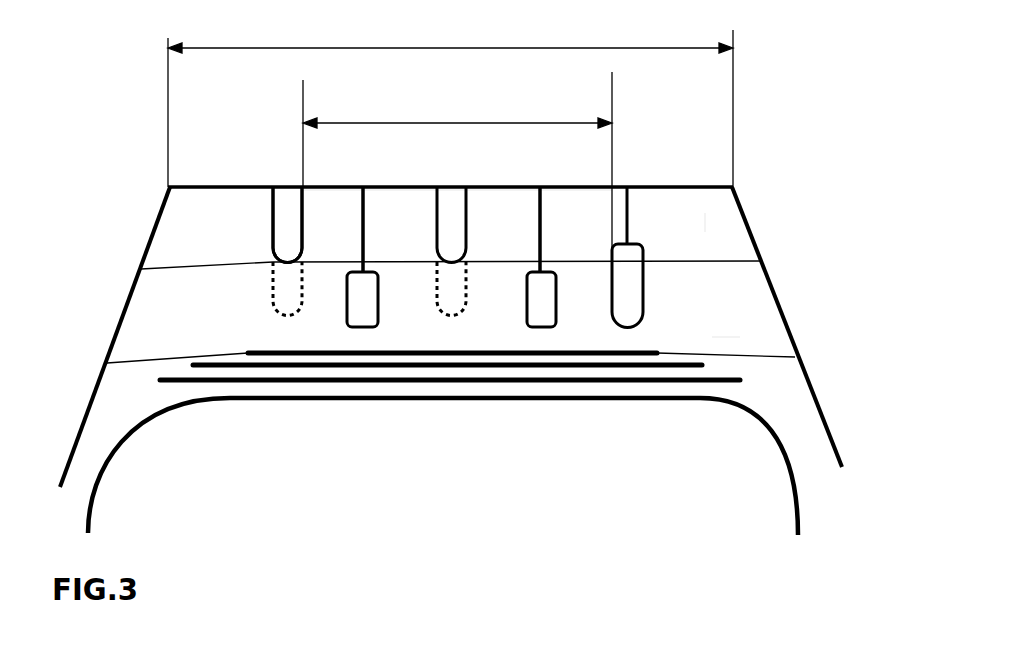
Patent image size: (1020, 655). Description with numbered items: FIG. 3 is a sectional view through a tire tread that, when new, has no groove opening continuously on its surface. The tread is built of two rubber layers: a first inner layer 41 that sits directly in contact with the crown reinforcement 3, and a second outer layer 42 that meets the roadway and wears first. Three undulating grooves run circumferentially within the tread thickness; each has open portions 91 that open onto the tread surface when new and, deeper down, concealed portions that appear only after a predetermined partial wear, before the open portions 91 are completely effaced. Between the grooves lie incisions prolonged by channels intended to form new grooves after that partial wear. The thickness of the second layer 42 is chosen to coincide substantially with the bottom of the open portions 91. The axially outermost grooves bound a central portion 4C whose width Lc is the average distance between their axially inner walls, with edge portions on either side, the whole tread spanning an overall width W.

The crown reinforcement 3 is at (193, 365).
The central portion 4C is at (403, 212).
The first (inner) layer 41 is at (712, 337).
The second (outer) layer 42 is at (705, 232).
The open portions 91 is at (285, 238).
The core width W is at (450, 101).
The width of the central portion Lc is at (457, 167).